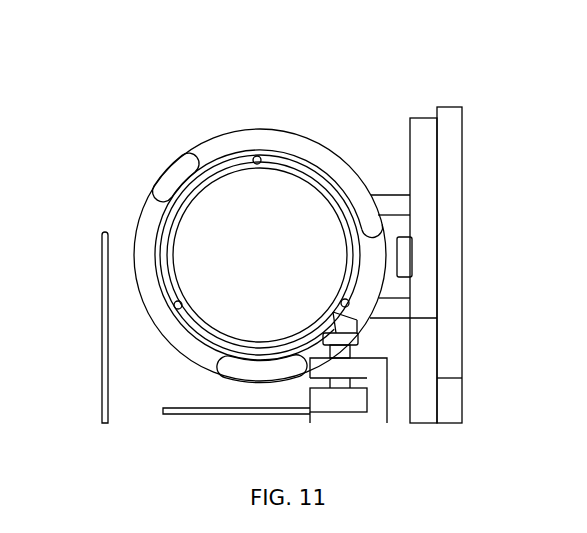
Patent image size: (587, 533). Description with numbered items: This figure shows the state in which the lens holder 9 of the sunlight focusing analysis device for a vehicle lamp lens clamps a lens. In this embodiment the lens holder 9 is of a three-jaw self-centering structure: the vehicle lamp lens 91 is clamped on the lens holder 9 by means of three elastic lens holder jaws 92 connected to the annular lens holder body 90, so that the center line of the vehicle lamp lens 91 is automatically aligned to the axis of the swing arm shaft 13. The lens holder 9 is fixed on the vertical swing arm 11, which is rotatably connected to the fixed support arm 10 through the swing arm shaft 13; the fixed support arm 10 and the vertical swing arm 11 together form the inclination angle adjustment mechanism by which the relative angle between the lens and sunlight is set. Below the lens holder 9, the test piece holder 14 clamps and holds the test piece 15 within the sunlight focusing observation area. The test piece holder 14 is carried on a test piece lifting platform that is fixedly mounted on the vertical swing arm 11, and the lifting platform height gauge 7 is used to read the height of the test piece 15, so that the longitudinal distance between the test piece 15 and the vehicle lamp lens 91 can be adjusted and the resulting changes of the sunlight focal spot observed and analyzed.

The lifting platform height gauge 7 is at (103, 308).
The lens holder 9 is at (133, 237).
The fixed support arm 10 is at (448, 188).
The vertical swing arm 11 is at (420, 133).
The swing arm shaft 13 is at (406, 260).
The test piece holder 14 is at (381, 384).
The test piece 15 is at (202, 406).
The lens holder body 90 is at (285, 133).
The vehicle lamp lens 91 is at (268, 218).
The lens holder jaw 92 is at (257, 371).